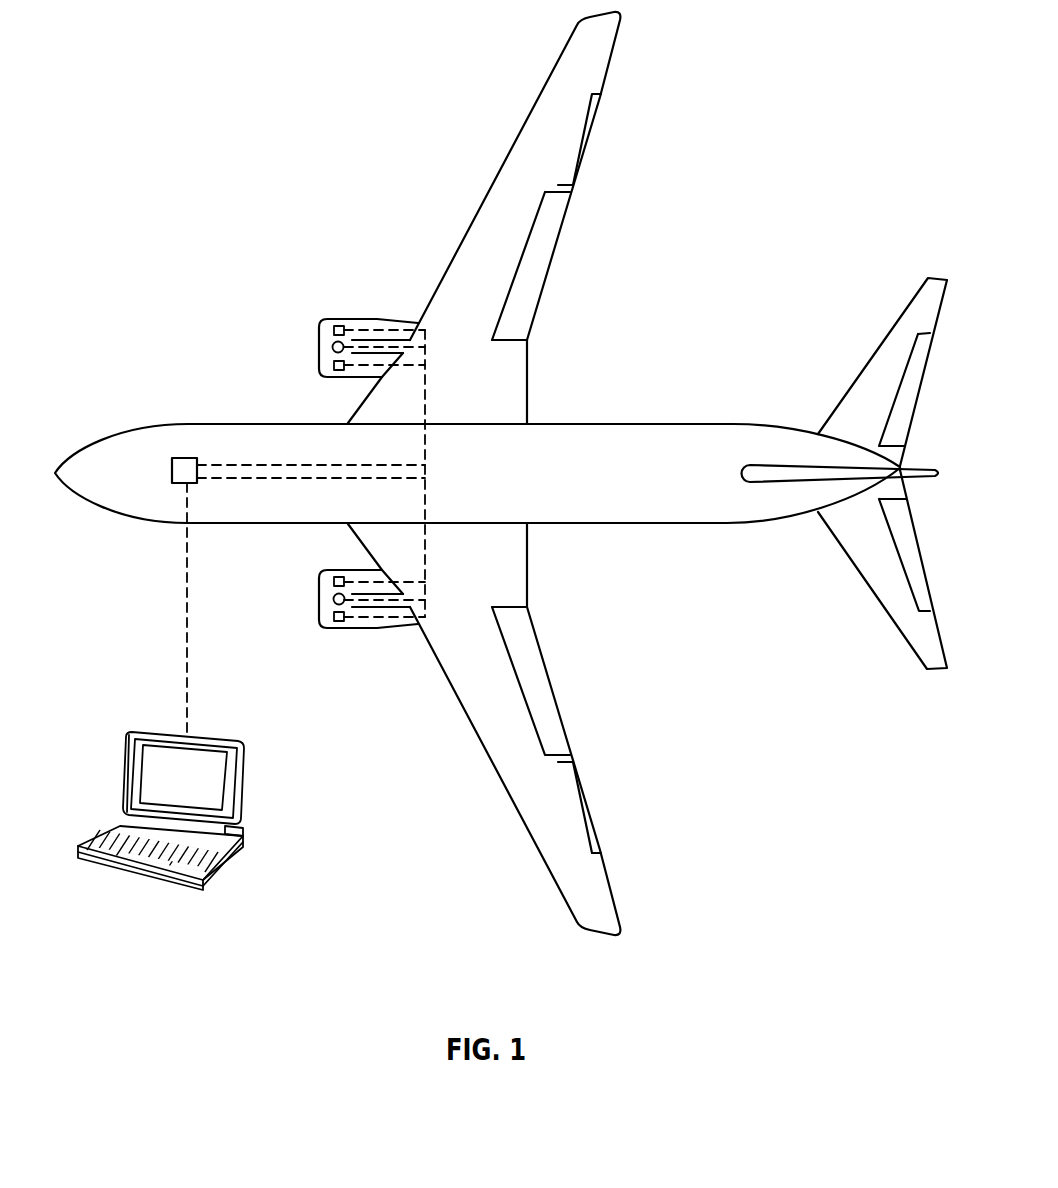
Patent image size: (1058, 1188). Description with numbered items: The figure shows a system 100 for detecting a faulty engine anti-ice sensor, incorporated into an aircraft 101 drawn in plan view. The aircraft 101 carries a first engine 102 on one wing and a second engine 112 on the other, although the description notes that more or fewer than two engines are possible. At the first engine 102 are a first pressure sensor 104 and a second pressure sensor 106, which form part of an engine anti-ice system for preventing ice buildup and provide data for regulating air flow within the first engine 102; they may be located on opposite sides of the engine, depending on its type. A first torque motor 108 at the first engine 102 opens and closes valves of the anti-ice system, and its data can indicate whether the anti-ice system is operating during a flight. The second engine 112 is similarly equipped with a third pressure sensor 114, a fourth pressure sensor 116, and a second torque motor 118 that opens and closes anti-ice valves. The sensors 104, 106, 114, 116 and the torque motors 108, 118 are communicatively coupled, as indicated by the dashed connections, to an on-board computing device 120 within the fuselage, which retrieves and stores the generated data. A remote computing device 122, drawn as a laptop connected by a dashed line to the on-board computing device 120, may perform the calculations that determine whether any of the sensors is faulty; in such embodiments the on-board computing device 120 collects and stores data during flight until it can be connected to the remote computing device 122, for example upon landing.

The system for detecting a faulty engine anti-ice sensor 100 is at (153, 150).
The aircraft 101 is at (598, 423).
The first engine 102 is at (365, 318).
The first pressure sensor 104 is at (333, 328).
The second pressure sensor 106 is at (334, 368).
The first torque motor 108 is at (332, 348).
The second engine 112 is at (353, 630).
The third pressure sensor 114 is at (333, 580).
The fourth pressure sensor 116 is at (338, 622).
The second torque motor 118 is at (332, 600).
The on-board computing device 120 is at (184, 458).
The remote computing device 122 is at (121, 818).